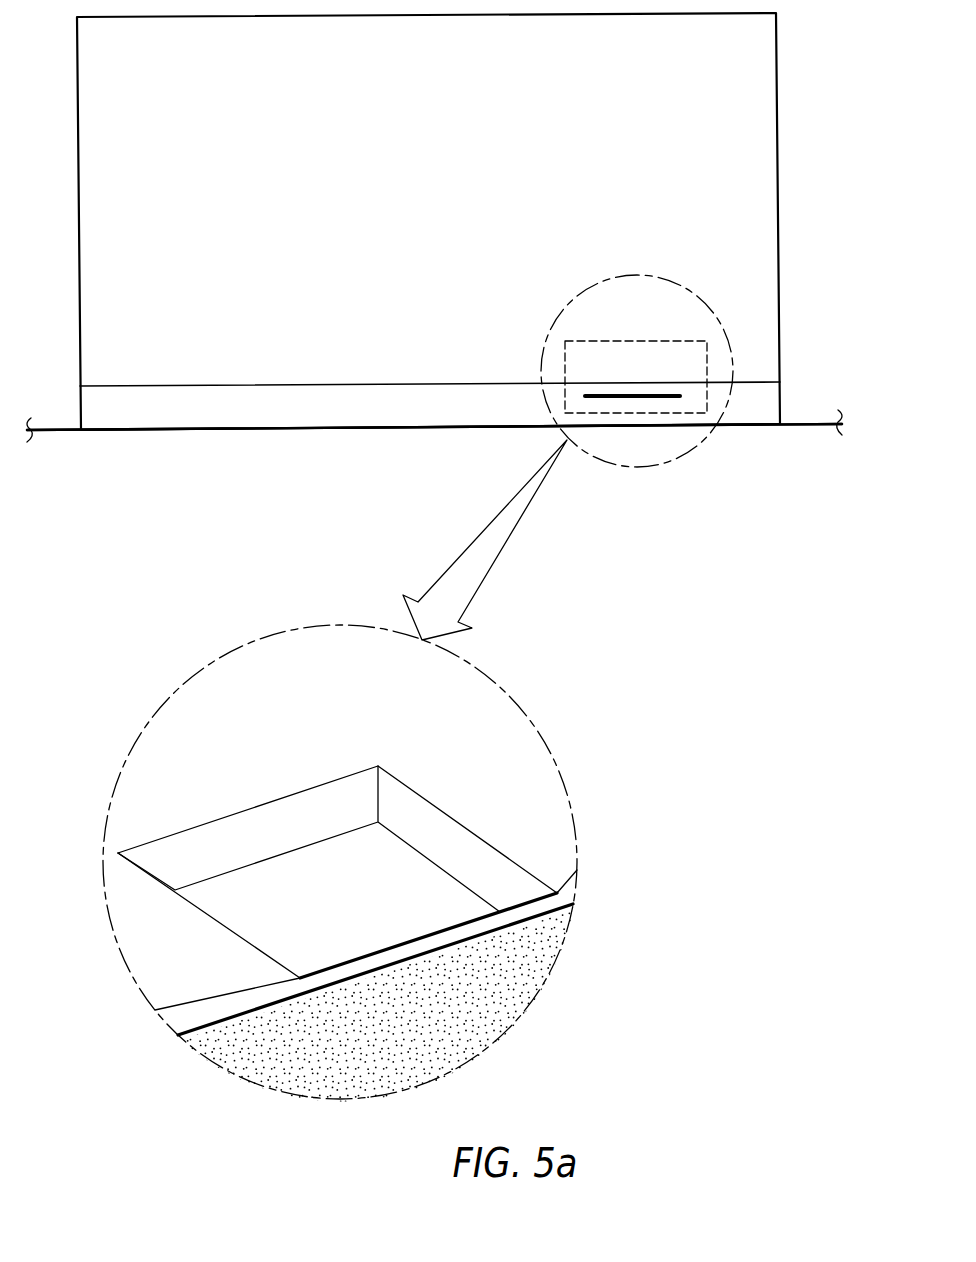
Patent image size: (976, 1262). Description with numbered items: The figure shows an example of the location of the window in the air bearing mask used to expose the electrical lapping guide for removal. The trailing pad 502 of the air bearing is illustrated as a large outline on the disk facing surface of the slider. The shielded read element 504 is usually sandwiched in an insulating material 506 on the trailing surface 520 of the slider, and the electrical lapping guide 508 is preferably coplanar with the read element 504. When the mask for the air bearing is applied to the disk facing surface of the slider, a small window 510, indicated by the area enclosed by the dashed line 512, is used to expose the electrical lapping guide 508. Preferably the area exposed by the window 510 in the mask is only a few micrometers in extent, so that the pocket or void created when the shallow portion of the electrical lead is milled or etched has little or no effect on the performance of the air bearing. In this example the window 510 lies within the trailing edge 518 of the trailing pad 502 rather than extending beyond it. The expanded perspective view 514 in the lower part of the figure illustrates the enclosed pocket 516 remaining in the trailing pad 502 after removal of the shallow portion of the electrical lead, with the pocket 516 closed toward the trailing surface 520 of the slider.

The trailing pad 502 is at (768, 143).
The shielded read element 504 is at (398, 406).
The insulating material 506 is at (217, 407).
The electrical lapping guide 508 is at (662, 398).
The window 510 is at (580, 363).
The dashed line 512 is at (636, 340).
The expanded perspective view 514 is at (533, 720).
The pocket 516 is at (493, 828).
The trailing edge 518 is at (310, 432).
The trailing surface 520 is at (523, 978).